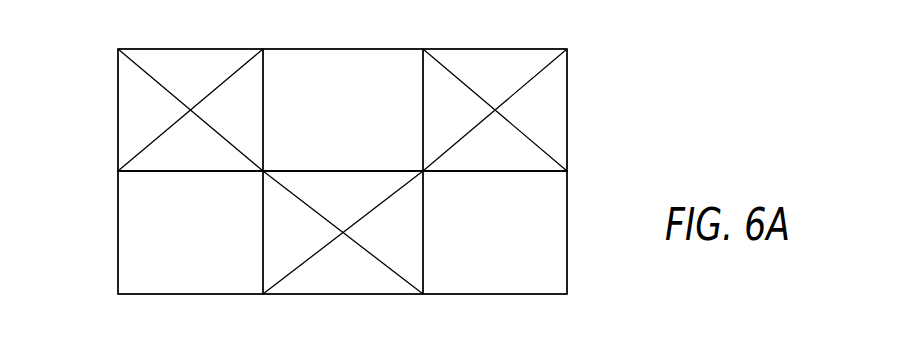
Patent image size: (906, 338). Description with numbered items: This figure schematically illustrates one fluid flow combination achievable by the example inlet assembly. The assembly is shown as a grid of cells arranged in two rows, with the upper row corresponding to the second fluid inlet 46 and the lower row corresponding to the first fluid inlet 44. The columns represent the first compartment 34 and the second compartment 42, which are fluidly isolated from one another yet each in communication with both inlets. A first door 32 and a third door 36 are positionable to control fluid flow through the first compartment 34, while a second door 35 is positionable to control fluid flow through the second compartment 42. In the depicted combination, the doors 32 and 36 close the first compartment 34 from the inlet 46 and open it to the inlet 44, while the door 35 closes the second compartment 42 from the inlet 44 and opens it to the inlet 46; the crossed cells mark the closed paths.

The first door 32 is at (172, 40).
The second door 35 is at (300, 40).
The third door 36 is at (474, 40).
The second fluid inlet 46 is at (106, 95).
The first fluid inlet 44 is at (106, 226).
The first compartment 34 is at (181, 122).
The second compartment 42 is at (334, 122).